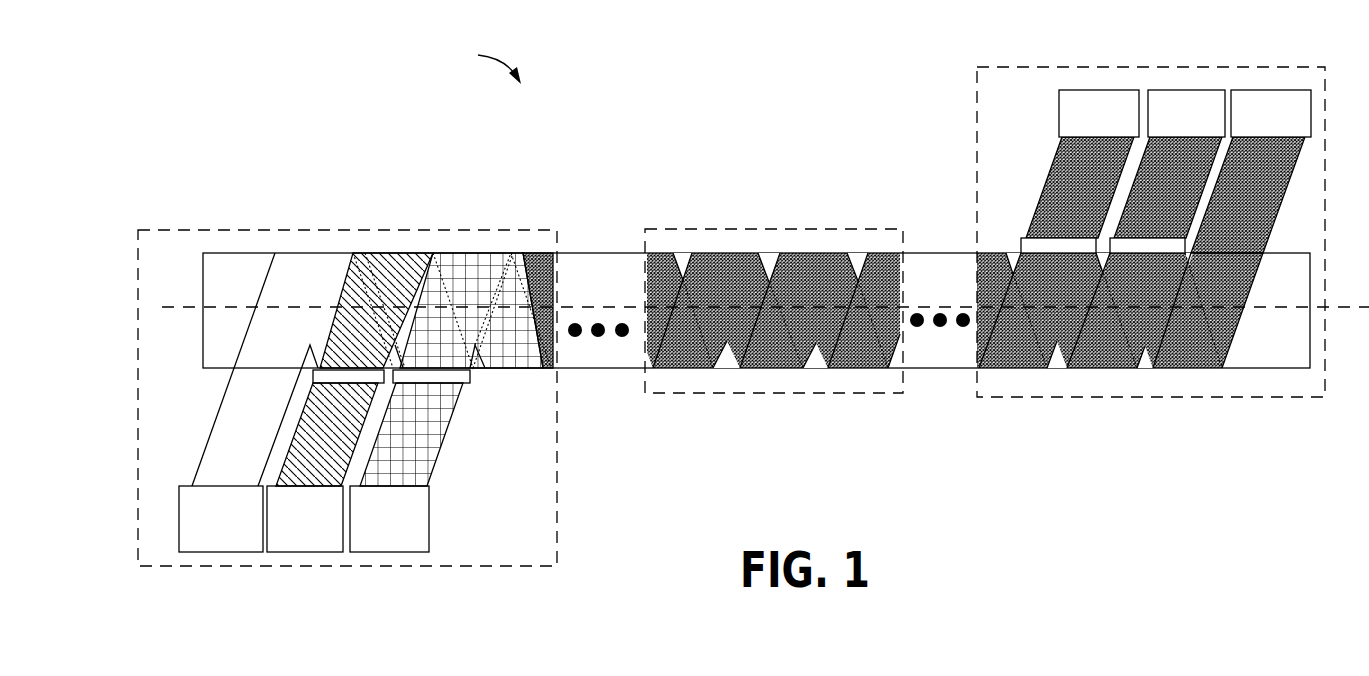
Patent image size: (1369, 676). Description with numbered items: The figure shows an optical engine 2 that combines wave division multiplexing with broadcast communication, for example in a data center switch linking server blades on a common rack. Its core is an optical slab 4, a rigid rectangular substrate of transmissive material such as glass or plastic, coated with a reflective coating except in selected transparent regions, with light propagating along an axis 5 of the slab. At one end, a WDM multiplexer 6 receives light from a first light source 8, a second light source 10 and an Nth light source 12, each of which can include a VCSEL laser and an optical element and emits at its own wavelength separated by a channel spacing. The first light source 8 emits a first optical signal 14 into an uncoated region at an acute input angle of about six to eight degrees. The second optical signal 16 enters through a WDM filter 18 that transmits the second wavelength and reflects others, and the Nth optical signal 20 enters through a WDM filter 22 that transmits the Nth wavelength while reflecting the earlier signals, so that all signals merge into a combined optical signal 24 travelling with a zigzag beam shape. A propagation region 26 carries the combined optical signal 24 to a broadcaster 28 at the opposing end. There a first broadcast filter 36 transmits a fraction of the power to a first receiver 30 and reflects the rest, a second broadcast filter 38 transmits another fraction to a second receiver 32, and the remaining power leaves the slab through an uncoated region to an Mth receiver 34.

The optical engine 2 is at (485, 64).
The optical slab 4 is at (605, 252).
The axis 5 is at (165, 305).
The WDM multiplexer 6 is at (147, 227).
The first light source 8 is at (245, 553).
The second light source 10 is at (320, 553).
The Nth light source 12 is at (395, 553).
The first optical signal 14 is at (265, 262).
The second optical signal 16 is at (353, 260).
The WDM filter 18 is at (353, 386).
The Nth optical signal 20 is at (437, 260).
The WDM filter 22 is at (433, 384).
The combined optical signal 24 is at (520, 260).
The propagation region 26 is at (672, 226).
The broadcaster 28 is at (977, 95).
The first receiver 30 is at (1100, 90).
The second receiver 32 is at (1188, 90).
The Mth receiver 34 is at (1267, 90).
The first broadcast filter 36 is at (1078, 238).
The second broadcast filter 38 is at (1167, 255).